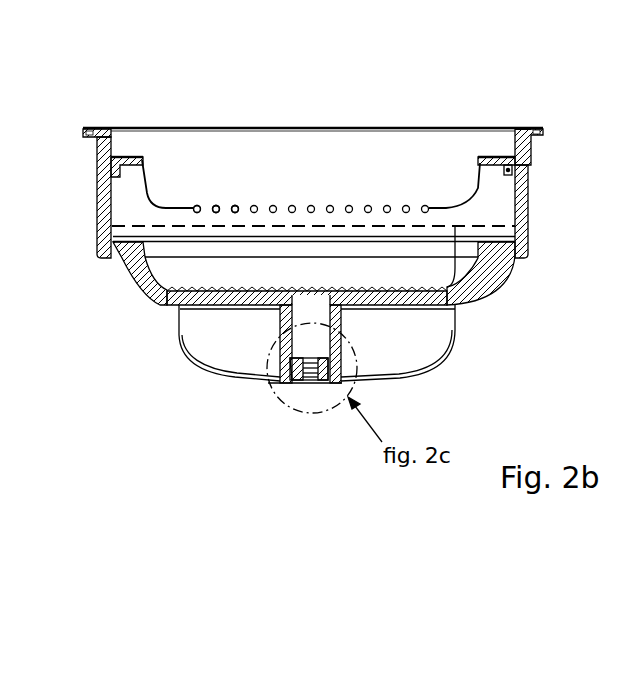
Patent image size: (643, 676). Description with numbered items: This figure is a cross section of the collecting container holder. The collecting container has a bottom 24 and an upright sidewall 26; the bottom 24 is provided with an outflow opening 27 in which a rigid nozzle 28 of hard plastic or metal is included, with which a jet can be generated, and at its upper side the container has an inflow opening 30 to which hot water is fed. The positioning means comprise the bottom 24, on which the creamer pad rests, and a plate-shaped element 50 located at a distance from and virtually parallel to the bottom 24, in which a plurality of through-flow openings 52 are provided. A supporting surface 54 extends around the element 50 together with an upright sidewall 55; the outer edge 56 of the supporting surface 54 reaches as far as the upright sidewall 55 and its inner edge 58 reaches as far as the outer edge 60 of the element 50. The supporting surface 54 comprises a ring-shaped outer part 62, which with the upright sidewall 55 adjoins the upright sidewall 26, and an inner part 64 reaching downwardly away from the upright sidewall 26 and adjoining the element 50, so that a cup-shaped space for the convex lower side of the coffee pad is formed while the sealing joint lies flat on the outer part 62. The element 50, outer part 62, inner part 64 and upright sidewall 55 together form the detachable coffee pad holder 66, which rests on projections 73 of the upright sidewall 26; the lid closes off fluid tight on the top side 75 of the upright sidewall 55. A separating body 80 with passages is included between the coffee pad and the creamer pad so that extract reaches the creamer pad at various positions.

The bottom 24 is at (165, 435).
The upright sidewall 26 is at (97, 177).
The outflow opening 27 is at (305, 338).
The nozzle 28 is at (323, 383).
The inflow opening 30 is at (313, 128).
The plate-shaped element 50 is at (360, 220).
The through-flow openings 52 is at (224, 206).
The supporting surface 54 is at (152, 142).
The upright sidewall 55 is at (97, 152).
The outer edge 56 is at (123, 140).
The inner edge 58 is at (216, 209).
The outer edge 60 is at (308, 125).
The ring-shaped outer part 62 is at (97, 217).
The inner part 64 is at (178, 128).
The coffee pad holder 66 is at (208, 227).
The projections 73 is at (513, 168).
The top side 75 is at (522, 128).
The separating body 80 is at (487, 277).